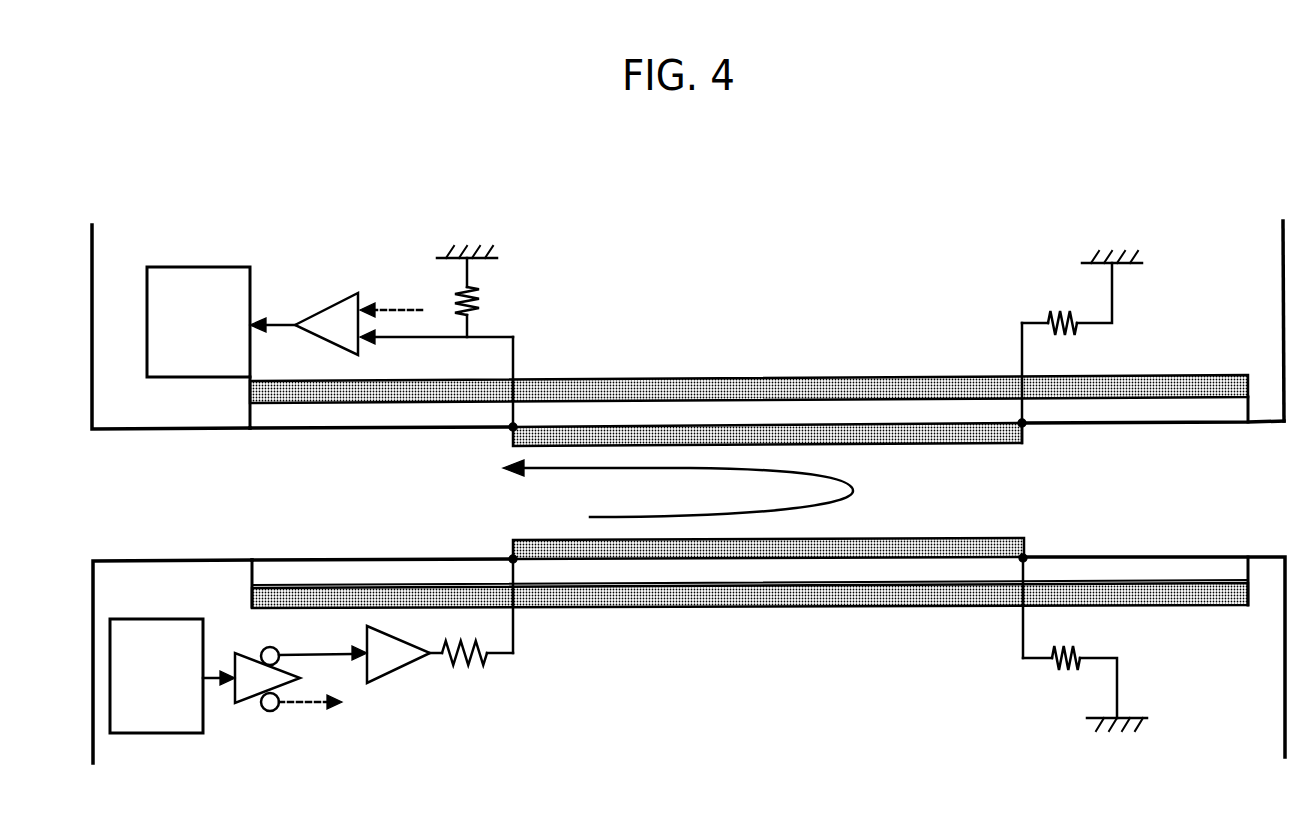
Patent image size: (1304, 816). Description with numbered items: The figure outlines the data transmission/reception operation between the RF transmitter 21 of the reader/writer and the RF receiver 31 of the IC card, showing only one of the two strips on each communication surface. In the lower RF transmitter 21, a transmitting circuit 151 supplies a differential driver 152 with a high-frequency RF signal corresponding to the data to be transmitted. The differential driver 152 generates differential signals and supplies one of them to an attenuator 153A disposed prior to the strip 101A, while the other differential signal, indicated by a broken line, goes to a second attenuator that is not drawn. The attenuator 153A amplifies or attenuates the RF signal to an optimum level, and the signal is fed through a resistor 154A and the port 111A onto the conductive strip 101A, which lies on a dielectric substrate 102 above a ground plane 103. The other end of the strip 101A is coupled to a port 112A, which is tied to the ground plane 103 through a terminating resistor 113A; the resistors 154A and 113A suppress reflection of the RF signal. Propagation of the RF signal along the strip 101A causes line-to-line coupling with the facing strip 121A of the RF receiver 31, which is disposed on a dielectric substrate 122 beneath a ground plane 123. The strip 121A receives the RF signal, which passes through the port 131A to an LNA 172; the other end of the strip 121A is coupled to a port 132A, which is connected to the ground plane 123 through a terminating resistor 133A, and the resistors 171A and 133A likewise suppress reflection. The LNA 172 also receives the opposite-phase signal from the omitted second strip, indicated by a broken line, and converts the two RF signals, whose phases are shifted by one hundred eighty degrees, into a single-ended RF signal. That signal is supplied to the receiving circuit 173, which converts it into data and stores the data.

The RF receiver 31 is at (92, 337).
The RF transmitter 21 is at (93, 641).
The receiving circuit 173 is at (215, 267).
The LNA (Low-Noise Amplifier) 172 is at (340, 293).
The resistor 171A is at (469, 298).
The port 131A is at (516, 425).
The port 132A is at (1020, 421).
The terminating resistor 133A is at (1055, 312).
The ground plane 123 is at (1205, 374).
The dielectric substrate 122 is at (1152, 410).
The conductive strip 121A is at (1000, 446).
The conductive strip 101A is at (925, 537).
The dielectric substrate 102 is at (1222, 568).
The ground plane 103 is at (1208, 606).
The port 111A is at (517, 562).
The port 112A is at (1022, 558).
The terminating resistor 113A is at (1058, 662).
The transmitting circuit 151 is at (167, 733).
The differential driver 152 is at (255, 705).
The attenuator 153A is at (393, 672).
The resistor 154A is at (466, 675).